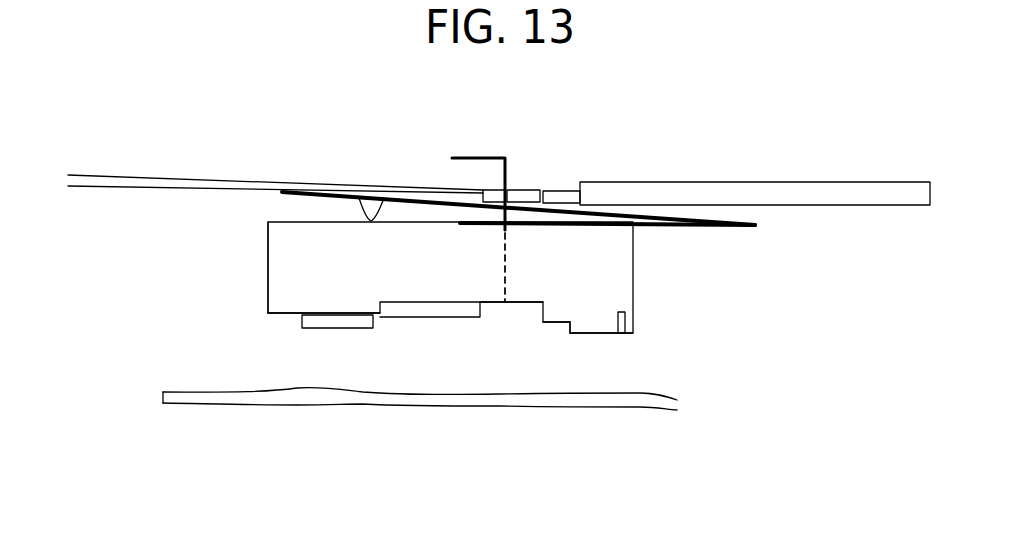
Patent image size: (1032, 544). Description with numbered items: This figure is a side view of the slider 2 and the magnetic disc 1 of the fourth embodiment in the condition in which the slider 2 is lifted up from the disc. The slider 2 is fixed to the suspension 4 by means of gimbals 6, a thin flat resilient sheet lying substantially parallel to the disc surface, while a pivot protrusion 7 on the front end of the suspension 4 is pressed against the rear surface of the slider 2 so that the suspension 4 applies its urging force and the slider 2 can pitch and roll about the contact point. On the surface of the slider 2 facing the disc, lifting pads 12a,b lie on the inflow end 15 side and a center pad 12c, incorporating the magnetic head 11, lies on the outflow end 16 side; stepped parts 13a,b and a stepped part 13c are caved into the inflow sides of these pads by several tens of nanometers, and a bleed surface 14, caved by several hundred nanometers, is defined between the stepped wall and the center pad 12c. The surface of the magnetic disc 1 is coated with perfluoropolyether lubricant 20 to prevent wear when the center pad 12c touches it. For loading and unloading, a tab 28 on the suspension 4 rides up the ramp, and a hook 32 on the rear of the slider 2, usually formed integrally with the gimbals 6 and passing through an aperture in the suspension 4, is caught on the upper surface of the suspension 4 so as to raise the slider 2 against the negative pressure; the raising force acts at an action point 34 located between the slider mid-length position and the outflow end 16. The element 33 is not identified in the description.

The magnetic disc 1 is at (200, 422).
The slider 2 is at (407, 280).
The suspension 4 is at (167, 190).
The gimbals 6 is at (662, 217).
The pivot protrusion 7 is at (370, 203).
The magnetic head 11 is at (632, 315).
The lifting pads 12a,b is at (318, 328).
The center pad 12c is at (600, 335).
The stepped parts 13a,b is at (282, 315).
The stepped part 13c is at (550, 323).
The bleed surface 14 is at (522, 303).
The inflow end 15 is at (267, 313).
The outflow end 16 is at (632, 335).
The perfluoropolyether lubricant 20 is at (195, 395).
The tab 28 is at (767, 192).
The hook 32 is at (477, 158).
The spacer blocks 33 is at (523, 190).
The action point 34 is at (502, 303).